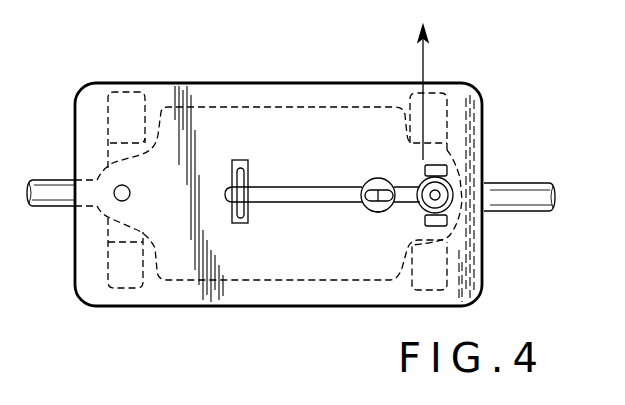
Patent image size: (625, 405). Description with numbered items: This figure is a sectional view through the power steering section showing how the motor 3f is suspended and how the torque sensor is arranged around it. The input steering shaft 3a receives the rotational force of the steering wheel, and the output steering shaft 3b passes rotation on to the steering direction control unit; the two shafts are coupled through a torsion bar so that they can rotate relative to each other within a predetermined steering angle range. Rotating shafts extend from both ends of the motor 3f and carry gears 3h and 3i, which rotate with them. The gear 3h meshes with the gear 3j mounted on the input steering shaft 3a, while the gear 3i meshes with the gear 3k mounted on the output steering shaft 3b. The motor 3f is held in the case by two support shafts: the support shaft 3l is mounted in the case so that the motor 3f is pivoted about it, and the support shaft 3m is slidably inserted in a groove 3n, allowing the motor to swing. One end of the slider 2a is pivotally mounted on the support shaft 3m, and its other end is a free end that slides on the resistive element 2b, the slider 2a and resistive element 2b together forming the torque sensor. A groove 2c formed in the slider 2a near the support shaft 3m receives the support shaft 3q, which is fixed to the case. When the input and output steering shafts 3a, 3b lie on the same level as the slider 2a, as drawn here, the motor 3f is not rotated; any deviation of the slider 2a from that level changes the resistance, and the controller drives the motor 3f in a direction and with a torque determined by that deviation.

The slider 2a is at (307, 188).
The resistive element 2b is at (238, 168).
The groove 2c is at (372, 182).
The input steering shaft 3a is at (529, 188).
The output steering shaft 3b is at (54, 185).
The motor 3f is at (370, 108).
The gear 3h is at (452, 148).
The gear 3i is at (147, 232).
The gear 3j is at (438, 96).
The gear 3k is at (110, 262).
The support shaft 3l is at (131, 193).
The support shaft 3m is at (432, 193).
The groove 3n is at (428, 222).
The support shaft 3q is at (380, 206).